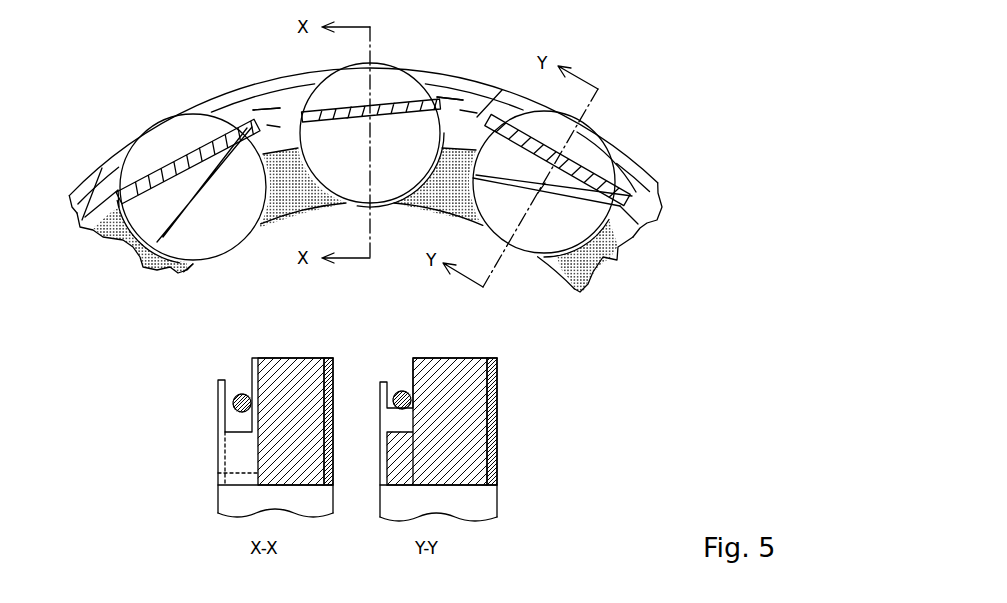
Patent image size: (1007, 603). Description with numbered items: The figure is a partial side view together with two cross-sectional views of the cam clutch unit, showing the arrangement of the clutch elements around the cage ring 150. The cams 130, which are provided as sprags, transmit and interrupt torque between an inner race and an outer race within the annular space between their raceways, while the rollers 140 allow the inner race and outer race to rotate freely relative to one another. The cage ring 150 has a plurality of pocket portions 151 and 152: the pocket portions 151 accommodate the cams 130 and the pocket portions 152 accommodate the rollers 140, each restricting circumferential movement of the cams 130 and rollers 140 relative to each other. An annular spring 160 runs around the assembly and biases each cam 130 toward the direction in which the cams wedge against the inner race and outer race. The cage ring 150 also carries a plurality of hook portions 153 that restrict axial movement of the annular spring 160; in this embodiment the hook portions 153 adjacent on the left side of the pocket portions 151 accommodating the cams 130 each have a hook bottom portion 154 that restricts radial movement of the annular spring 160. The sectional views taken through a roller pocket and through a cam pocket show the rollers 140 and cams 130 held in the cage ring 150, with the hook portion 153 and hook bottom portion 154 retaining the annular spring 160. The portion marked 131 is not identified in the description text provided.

The cam 130 is at (183, 128).
The inner portion of retainer 131 is at (200, 187).
The roller 140 is at (347, 93).
The cage ring 150 is at (493, 97).
The pocket portion 151 is at (229, 90).
The pocket portion 152 is at (417, 62).
The hook portion 153 is at (218, 400).
The hook bottom portion 154 is at (457, 117).
The annular spring 160 is at (592, 157).